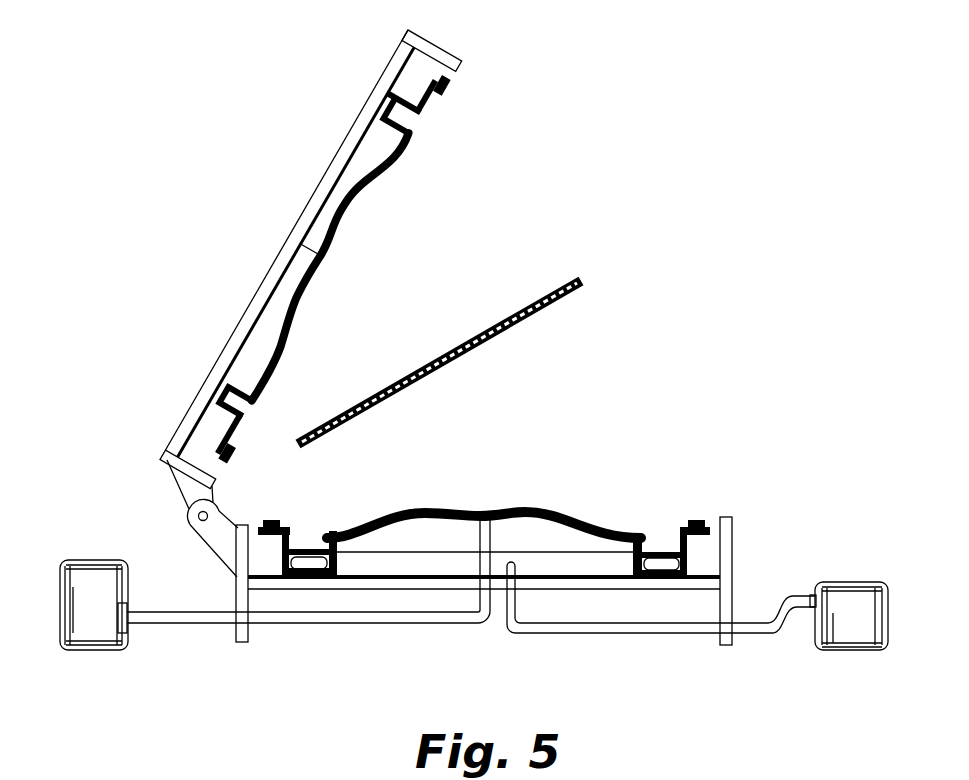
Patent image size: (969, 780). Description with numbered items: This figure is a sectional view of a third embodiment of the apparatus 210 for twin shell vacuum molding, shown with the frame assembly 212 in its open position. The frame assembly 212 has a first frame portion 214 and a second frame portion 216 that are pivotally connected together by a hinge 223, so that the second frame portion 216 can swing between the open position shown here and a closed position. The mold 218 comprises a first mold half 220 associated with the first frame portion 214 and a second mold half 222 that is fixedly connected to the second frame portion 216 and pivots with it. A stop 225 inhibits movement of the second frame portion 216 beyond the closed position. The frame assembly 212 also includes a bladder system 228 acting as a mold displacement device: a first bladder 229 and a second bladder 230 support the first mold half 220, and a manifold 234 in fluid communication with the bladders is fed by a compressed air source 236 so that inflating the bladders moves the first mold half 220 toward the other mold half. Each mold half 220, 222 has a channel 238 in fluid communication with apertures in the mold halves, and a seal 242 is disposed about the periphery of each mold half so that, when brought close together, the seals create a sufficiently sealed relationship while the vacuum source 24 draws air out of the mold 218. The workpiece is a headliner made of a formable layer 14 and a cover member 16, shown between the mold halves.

The formable layer 14 is at (437, 360).
The cover member 16 is at (407, 393).
The vacuum source 24 is at (87, 558).
The third embodiment of the apparatus 210 is at (114, 478).
The frame assembly 212 is at (148, 466).
The first frame portion 214 is at (296, 590).
The second frame portion 216 is at (233, 328).
The mold 218 is at (418, 78).
The first mold half 220 is at (696, 540).
The second mold half 222 is at (433, 68).
The hinge 223 is at (192, 514).
The stop 225 is at (737, 519).
The bladder system 228 is at (848, 664).
The first bladder 229 is at (311, 562).
The second bladder 230 is at (661, 578).
The manifold 234 is at (571, 552).
The compressed air source 236 is at (849, 580).
The channel 238 is at (402, 125).
The seal 242 is at (448, 90).